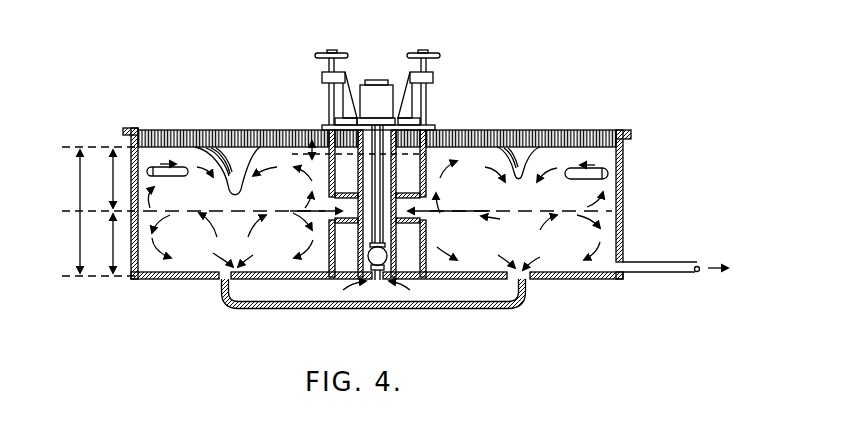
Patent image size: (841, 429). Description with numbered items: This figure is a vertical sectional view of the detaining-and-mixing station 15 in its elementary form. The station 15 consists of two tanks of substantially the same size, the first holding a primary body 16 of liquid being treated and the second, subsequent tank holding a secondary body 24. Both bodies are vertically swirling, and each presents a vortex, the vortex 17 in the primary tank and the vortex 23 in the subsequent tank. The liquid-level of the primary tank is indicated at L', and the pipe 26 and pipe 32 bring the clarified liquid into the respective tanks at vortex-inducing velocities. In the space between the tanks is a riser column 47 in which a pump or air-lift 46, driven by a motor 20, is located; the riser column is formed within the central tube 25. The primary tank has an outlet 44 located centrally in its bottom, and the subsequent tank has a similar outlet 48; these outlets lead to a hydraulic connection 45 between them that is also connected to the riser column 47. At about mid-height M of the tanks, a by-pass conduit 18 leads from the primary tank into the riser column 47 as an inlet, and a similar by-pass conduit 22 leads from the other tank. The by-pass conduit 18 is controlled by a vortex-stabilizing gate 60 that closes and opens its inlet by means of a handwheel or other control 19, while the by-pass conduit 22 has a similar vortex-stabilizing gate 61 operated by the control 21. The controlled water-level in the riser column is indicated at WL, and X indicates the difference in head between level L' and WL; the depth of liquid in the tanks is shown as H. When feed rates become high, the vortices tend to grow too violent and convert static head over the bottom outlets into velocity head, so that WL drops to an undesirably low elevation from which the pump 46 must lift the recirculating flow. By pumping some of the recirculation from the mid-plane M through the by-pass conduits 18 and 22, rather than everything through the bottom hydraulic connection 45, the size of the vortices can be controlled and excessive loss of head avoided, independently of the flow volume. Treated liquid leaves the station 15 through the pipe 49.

The detaining-and-mixing station 15 is at (129, 128).
The inlet pipe 26 is at (155, 166).
The vortex 17 is at (228, 150).
The liquid-level L' is at (247, 114).
The difference in head X is at (307, 154).
The water-level WL is at (368, 153).
The handwheel 19 is at (329, 52).
The motor 20 is at (362, 80).
The control 21 is at (427, 53).
The outer tube 25 is at (382, 172).
The vortex 23 is at (522, 158).
The right inlet pipe 32 is at (608, 168).
The liquid height H is at (98, 211).
The primary body 16 is at (243, 233).
The secondary body 24 is at (530, 233).
The vortex-stabilizing gate 60 is at (327, 203).
The vortex-stabilizing gate 61 is at (432, 205).
The by-pass conduit 18 is at (354, 215).
The by-pass conduit 22 is at (400, 214).
The mid-height M is at (207, 203).
The outlet 44 is at (222, 297).
The hydraulic connection 45 is at (324, 309).
The outlet 48 is at (517, 285).
The pump 46 is at (378, 280).
The riser column 47 is at (392, 235).
The pipe 49 is at (688, 262).